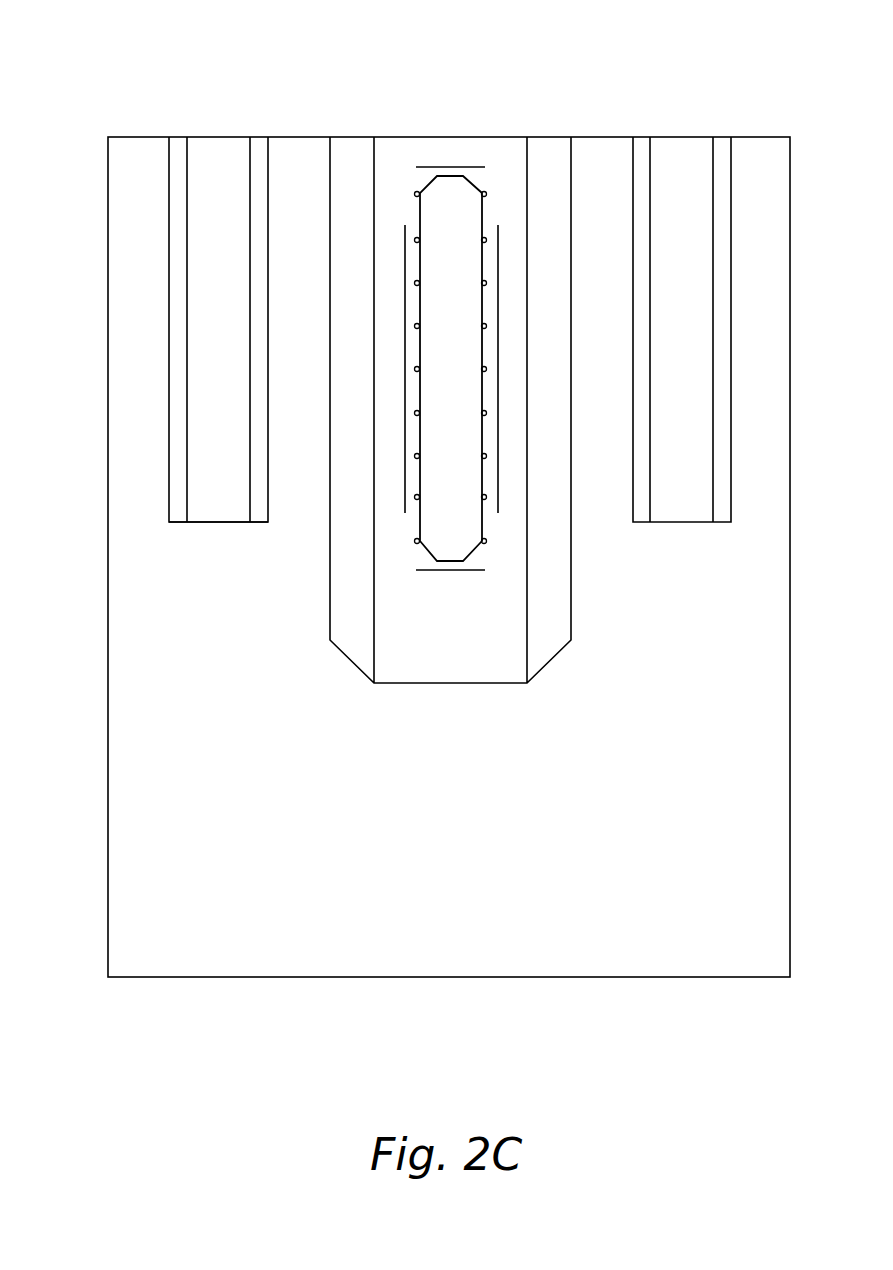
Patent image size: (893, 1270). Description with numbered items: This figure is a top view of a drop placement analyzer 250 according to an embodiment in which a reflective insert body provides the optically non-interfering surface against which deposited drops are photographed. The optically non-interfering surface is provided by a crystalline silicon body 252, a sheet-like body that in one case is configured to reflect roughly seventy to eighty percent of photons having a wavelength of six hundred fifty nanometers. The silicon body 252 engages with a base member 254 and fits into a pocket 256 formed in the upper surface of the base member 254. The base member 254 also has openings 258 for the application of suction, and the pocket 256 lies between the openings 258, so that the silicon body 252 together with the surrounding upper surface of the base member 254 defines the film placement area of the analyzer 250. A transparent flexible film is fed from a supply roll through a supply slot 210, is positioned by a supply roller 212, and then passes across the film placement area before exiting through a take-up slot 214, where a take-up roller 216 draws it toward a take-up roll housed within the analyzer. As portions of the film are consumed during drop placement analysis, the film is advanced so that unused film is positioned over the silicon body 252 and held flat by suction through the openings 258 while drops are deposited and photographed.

The drop placement analyzer 250 is at (125, 47).
The supply roller 212 is at (681, 137).
The take-up slot 214 is at (169, 281).
The take-up roller 216 is at (221, 522).
The supply slot 210 is at (731, 281).
The base member 254 is at (571, 586).
The pocket 256 is at (482, 212).
The crystalline silicon body 252 is at (419, 193).
The openings 258 is at (419, 541).